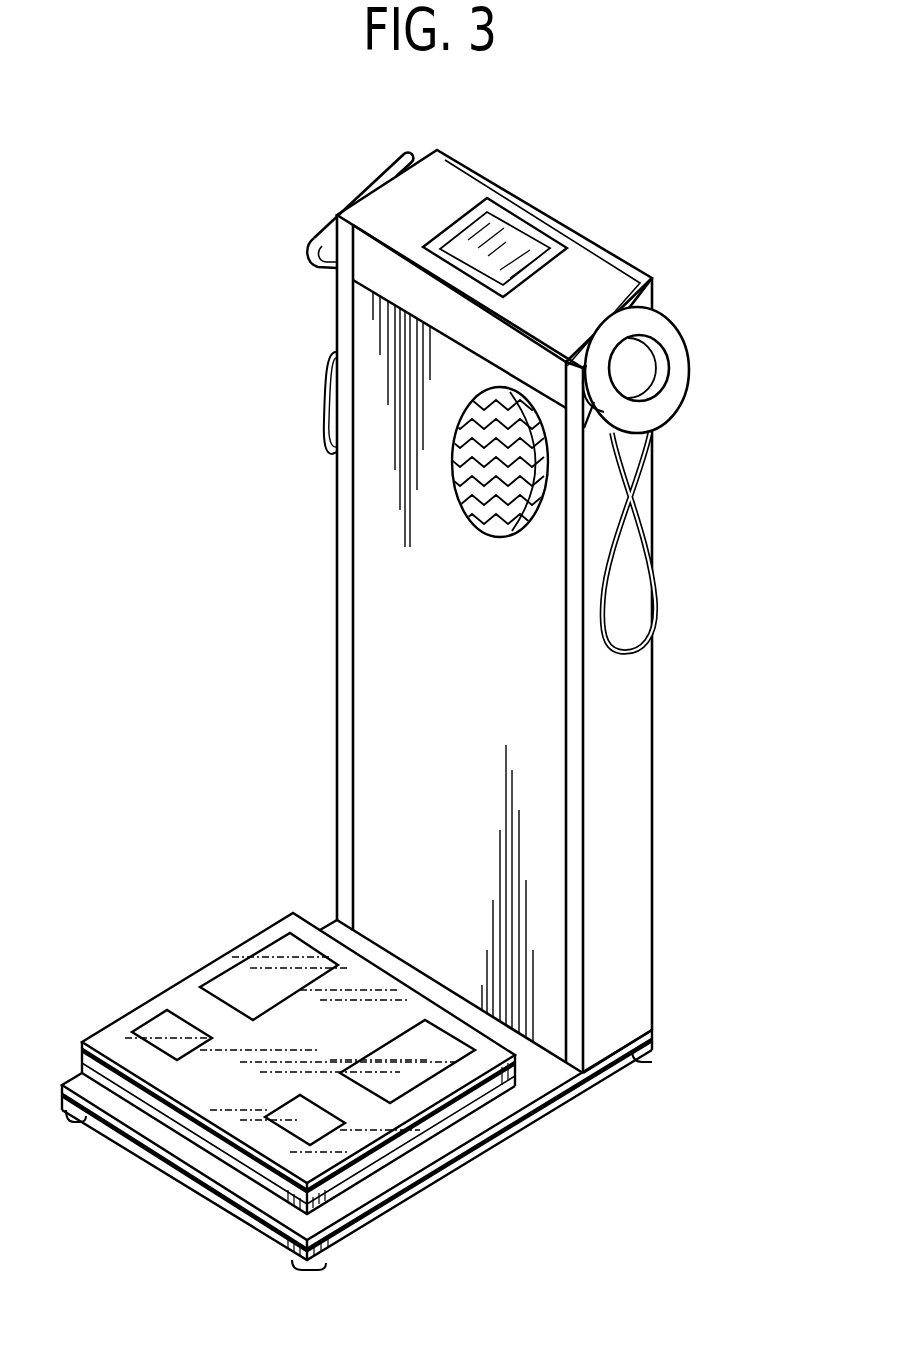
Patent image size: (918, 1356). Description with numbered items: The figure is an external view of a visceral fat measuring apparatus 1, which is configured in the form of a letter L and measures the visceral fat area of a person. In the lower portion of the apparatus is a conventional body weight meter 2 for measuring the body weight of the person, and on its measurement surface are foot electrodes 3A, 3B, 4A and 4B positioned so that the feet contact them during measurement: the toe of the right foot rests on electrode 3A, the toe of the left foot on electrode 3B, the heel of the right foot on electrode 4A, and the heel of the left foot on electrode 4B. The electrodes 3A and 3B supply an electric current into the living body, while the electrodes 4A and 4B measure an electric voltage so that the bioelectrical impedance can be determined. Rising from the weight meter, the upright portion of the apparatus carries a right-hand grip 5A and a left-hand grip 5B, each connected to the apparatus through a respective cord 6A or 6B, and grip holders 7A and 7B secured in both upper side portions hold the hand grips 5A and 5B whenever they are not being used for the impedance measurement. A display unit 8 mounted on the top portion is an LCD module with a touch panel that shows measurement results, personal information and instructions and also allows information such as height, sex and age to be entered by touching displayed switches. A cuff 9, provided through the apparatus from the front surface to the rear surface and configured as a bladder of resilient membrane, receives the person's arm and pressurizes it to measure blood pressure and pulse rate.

The visceral fat measuring apparatus 1 is at (688, 797).
The body weight meter 2 is at (233, 1080).
The foot electrode 3A is at (433, 1050).
The foot electrode 3B is at (282, 950).
The foot electrode 4A is at (322, 1127).
The foot electrode 4B is at (163, 1023).
The right-hand grip 5A is at (660, 353).
The left-hand grip 5B is at (357, 190).
The cord 6A is at (657, 607).
The cord 6B is at (320, 402).
The grip holder 7A is at (652, 405).
The grip holder 7B is at (317, 240).
The display unit 8 is at (510, 243).
The cuff 9 is at (487, 455).